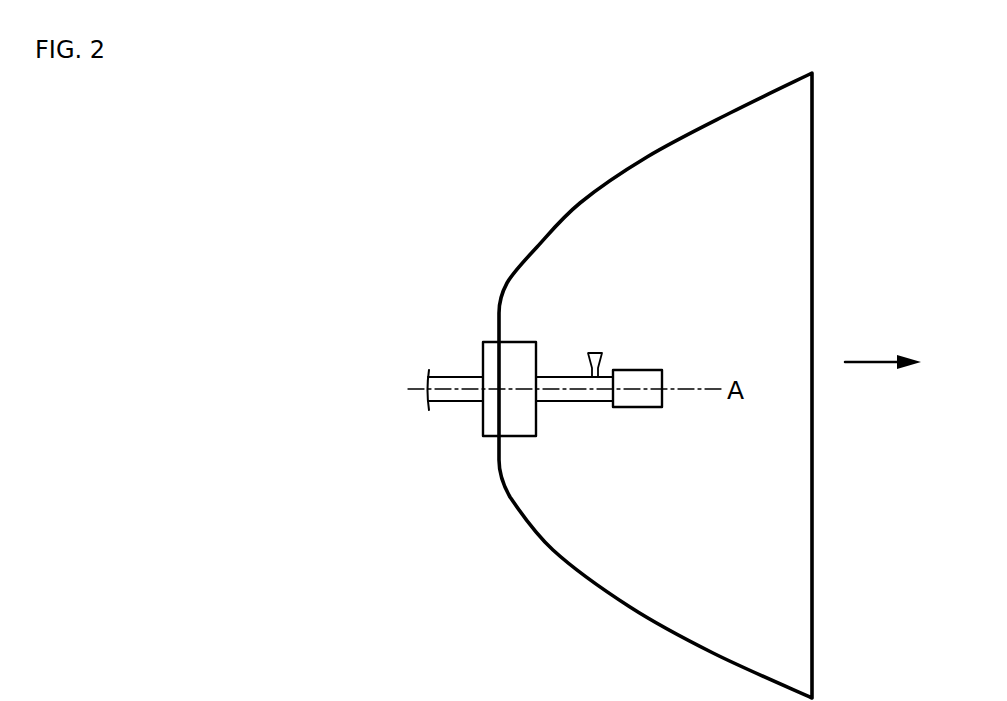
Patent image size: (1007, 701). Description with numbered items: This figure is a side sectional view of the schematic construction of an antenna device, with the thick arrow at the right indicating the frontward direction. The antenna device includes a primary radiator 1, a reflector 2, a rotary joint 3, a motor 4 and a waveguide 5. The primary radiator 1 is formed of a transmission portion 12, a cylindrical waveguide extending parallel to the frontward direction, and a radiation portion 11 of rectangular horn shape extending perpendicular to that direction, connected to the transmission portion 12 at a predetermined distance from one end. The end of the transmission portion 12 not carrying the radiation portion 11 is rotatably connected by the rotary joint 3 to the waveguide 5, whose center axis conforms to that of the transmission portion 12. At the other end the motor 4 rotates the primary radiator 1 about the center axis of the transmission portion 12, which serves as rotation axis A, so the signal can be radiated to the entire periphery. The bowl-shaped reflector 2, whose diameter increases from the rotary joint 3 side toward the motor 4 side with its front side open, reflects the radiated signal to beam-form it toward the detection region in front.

The primary radiator 1 is at (562, 389).
The reflector 2 is at (568, 227).
The rotary joint 3 is at (488, 436).
The motor 4 is at (661, 376).
The waveguide 5 is at (461, 383).
The radiation portion 11 is at (602, 359).
The transmission portion 12 is at (572, 380).